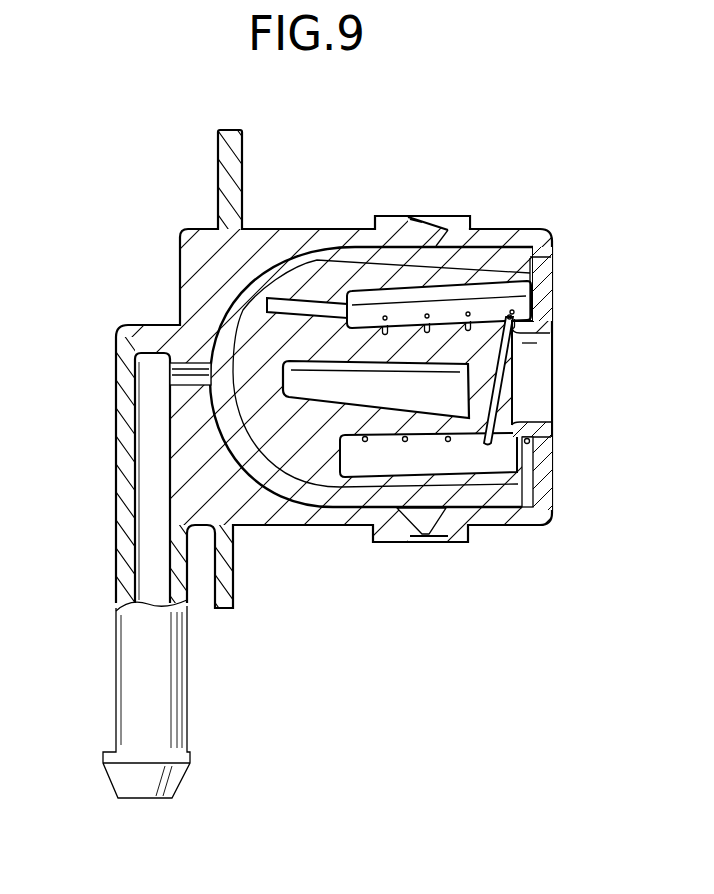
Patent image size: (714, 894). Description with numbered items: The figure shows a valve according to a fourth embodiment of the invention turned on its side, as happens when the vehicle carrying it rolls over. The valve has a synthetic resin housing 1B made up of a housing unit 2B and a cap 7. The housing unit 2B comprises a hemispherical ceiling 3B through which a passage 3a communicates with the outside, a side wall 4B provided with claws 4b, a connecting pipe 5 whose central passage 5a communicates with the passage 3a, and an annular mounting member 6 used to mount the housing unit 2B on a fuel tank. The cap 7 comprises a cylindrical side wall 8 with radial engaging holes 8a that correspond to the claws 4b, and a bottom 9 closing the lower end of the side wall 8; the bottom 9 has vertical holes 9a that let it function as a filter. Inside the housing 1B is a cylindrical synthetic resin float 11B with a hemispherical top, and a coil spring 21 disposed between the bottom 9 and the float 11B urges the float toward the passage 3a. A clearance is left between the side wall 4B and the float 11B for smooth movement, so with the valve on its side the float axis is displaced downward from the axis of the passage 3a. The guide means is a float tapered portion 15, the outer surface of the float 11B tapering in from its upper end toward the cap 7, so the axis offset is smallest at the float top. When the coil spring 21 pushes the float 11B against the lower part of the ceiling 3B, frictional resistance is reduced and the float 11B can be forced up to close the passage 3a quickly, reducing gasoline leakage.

The housing 1B is at (180, 204).
The housing unit 2B is at (169, 306).
The hemispherical ceiling 3B is at (187, 272).
The side wall 4B is at (316, 228).
The connecting pipe 5 is at (140, 664).
The passage 5a is at (147, 511).
The annular mounting member 6 is at (236, 152).
The passage 3a is at (185, 373).
The claws 4b is at (420, 216).
The engaging holes 8a is at (453, 218).
The float tapered portion 15 is at (484, 250).
The coil spring 21 is at (505, 372).
The cap 7 is at (538, 231).
The side wall 8 is at (513, 527).
The bottom 9 is at (548, 443).
The vertical holes 9a is at (553, 258).
The float 11B is at (342, 486).